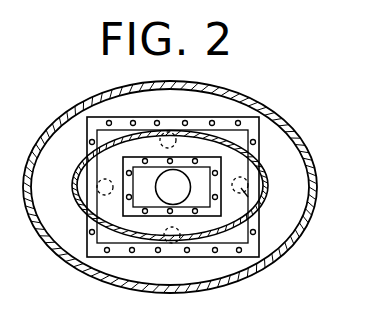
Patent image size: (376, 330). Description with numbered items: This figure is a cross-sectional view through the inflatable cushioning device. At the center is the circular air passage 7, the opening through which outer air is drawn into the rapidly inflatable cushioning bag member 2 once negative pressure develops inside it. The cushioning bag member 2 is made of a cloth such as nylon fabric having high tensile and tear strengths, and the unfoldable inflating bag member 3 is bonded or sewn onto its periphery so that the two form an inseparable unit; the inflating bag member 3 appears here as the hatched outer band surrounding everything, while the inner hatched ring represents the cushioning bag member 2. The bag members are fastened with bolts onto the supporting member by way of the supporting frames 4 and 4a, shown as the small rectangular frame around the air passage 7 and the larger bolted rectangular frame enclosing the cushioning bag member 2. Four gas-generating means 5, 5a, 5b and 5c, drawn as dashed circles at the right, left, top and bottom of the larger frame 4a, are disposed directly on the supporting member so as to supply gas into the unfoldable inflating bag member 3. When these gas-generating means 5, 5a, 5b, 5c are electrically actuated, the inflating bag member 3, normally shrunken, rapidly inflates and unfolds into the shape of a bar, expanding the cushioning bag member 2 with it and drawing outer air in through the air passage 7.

The rapidly inflatable cushioning bag member 2 is at (269, 186).
The unfoldable inflating bag member 3 is at (288, 119).
The supporting frame 4 is at (126, 160).
The supporting frame 4a is at (259, 133).
The gas-generating means 5 is at (268, 200).
The gas-generating means 5a is at (100, 183).
The gas-generating means 5b is at (170, 143).
The gas-generating means 5c is at (172, 238).
The air passage 7 is at (158, 189).